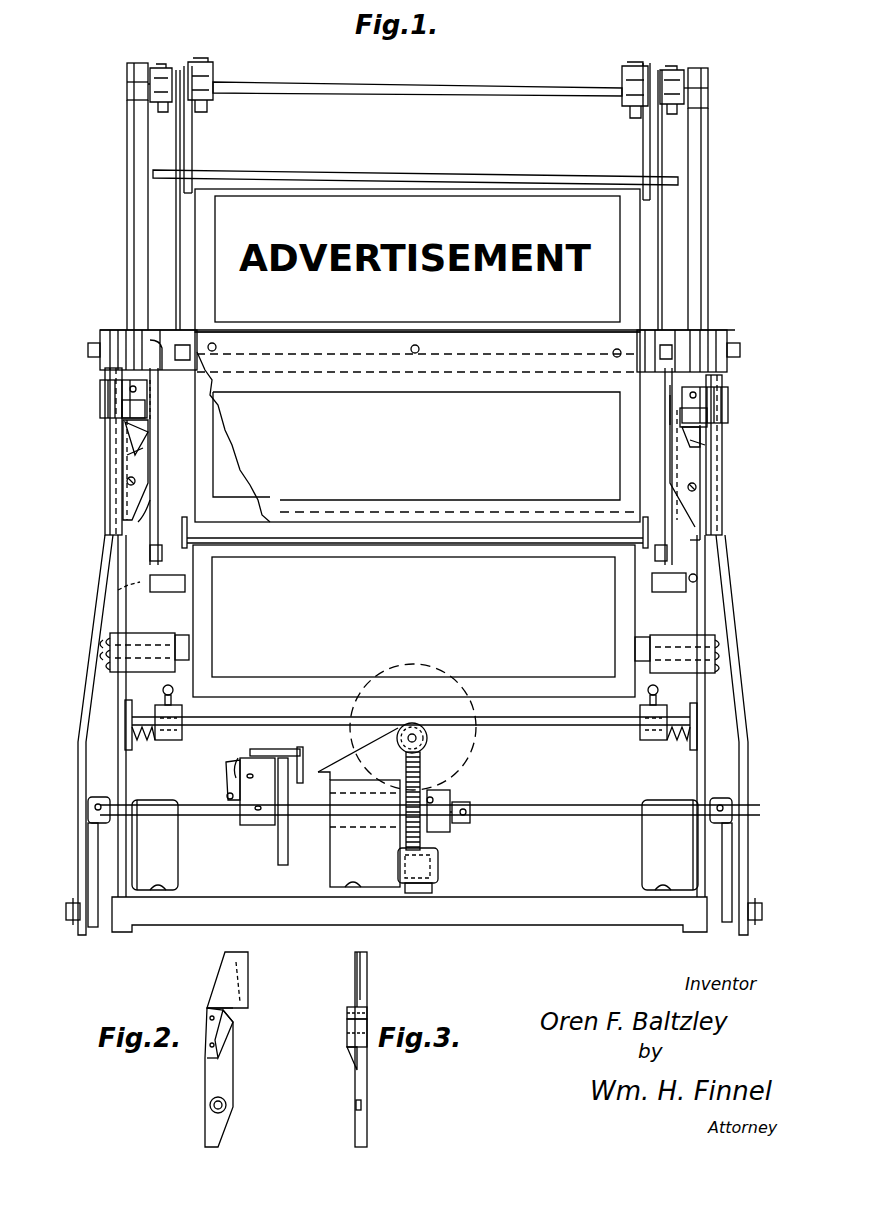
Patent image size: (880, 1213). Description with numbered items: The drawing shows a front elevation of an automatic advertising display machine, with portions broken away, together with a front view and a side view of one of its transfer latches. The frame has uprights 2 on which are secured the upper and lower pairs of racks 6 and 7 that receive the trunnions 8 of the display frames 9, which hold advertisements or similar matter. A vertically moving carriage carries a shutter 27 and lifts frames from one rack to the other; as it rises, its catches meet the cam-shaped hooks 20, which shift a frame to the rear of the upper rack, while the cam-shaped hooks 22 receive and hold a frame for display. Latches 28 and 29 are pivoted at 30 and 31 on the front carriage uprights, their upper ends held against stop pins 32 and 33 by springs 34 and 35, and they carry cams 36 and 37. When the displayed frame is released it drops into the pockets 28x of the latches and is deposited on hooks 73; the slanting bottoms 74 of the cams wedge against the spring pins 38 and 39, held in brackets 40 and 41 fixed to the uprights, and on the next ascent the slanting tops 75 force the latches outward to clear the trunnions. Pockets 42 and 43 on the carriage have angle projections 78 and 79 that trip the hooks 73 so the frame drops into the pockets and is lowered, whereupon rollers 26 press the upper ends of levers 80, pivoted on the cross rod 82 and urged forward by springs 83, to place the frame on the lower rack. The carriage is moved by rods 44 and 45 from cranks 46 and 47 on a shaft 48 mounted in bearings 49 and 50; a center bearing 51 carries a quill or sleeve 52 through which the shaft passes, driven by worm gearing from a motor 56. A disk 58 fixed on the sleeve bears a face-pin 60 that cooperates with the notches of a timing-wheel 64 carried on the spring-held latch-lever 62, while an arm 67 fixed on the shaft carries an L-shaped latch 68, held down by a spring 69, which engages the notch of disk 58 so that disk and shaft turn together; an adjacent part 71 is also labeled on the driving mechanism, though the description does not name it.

In FIG. 1, the uprights 2 is at (116, 698).
In FIG. 1, the upper pair of racks 6 is at (168, 372).
In FIG. 1, the lower pair of racks 7 is at (408, 560).
In FIG. 1, the trunnions 8 is at (411, 466).
In FIG. 1, the display frames 9 is at (210, 660).
In FIG. 1, the cam-shaped hooks 20 is at (175, 260).
In FIG. 1, the cam-shaped hooks 22 is at (194, 148).
In FIG. 1, the rollers 26 is at (190, 640).
In FIG. 1, the shutter 27 is at (417, 427).
In FIG. 1, the latch 28 is at (128, 452).
In FIG. 2, the latch 28 is at (234, 1084).
In FIG. 3, the latch 28 is at (368, 1076).
In FIG. 2, the pockets 28x is at (243, 976).
In FIG. 3, the pockets 28x is at (370, 975).
In FIG. 1, the latch 29 is at (692, 462).
In FIG. 1, the pivot 30 is at (127, 483).
In FIG. 1, the pivot 31 is at (697, 487).
In FIG. 1, the stop pin 32 is at (160, 385).
In FIG. 1, the stop pin 33 is at (657, 418).
In FIG. 1, the spring 34 is at (150, 505).
In FIG. 1, the spring 35 is at (698, 530).
In FIG. 1, the cam 36 is at (140, 430).
In FIG. 2, the cam 36 is at (224, 1035).
In FIG. 3, the cam 36 is at (347, 1031).
In FIG. 1, the cam 37 is at (688, 440).
In FIG. 1, the spring pin 38 is at (128, 389).
In FIG. 1, the spring pin 39 is at (698, 395).
In FIG. 1, the bracket 40 is at (100, 410).
In FIG. 1, the bracket 41 is at (729, 413).
In FIG. 1, the pocket 42 is at (118, 590).
In FIG. 1, the pocket 43 is at (698, 580).
In FIG. 1, the rod 44 is at (100, 652).
In FIG. 1, the rod 45 is at (746, 705).
In FIG. 1, the crank 46 is at (90, 862).
In FIG. 1, the crank 47 is at (733, 862).
In FIG. 1, the shaft 48 is at (220, 816).
In FIG. 1, the bearing 49 is at (155, 845).
In FIG. 1, the bearing 50 is at (670, 845).
In FIG. 1, the bearing 51 is at (359, 807).
In FIG. 1, the quill or sleeve 52 is at (463, 824).
In FIG. 1, the motor 56 is at (413, 727).
In FIG. 1, the disk 58 is at (278, 852).
In FIG. 1, the face-pin 60 is at (479, 695).
In FIG. 1, the latch-lever 62 is at (295, 752).
In FIG. 1, the timing-wheel 64 is at (304, 755).
In FIG. 1, the arm 67 is at (257, 791).
In FIG. 1, the L-shaped latch 68 is at (231, 756).
In FIG. 1, the spring 69 is at (228, 775).
In FIG. 1, the plate 71 is at (273, 743).
In FIG. 1, the hooks 73 is at (175, 215).
In FIG. 1, the slanting bottoms 74 is at (125, 452).
In FIG. 2, the slanting bottoms 74 is at (220, 1055).
In FIG. 3, the slanting bottoms 74 is at (352, 1060).
In FIG. 2, the slanting tops 75 is at (235, 1012).
In FIG. 3, the slanting tops 75 is at (352, 1010).
In FIG. 1, the angle projection 78 is at (186, 580).
In FIG. 1, the angle projection 79 is at (651, 582).
In FIG. 1, the levers 80 is at (188, 527).
In FIG. 1, the cross rod 82 is at (215, 727).
In FIG. 1, the springs 83 is at (160, 742).